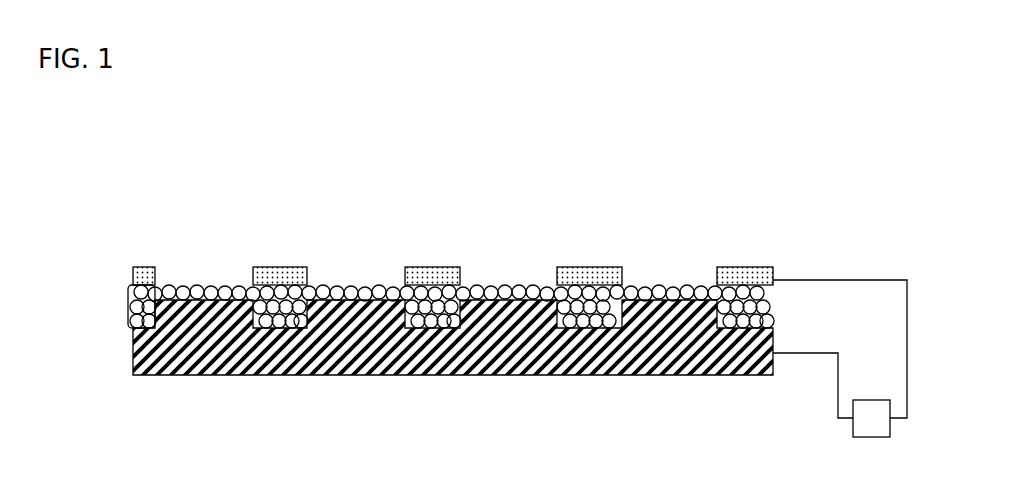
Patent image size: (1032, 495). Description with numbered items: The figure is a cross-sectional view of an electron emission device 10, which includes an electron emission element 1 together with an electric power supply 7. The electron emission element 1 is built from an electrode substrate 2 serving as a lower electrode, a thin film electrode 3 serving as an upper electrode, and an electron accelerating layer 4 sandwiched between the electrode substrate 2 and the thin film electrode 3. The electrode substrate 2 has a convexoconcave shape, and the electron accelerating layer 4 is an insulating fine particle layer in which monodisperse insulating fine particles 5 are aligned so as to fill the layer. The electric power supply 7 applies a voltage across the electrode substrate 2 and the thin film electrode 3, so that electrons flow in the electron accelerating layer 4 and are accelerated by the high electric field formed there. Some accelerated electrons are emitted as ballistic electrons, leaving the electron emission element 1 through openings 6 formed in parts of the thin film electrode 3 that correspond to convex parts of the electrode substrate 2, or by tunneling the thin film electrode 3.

The electron emission device 10 is at (136, 170).
The electron emission element 1 is at (73, 263).
The electrode substrate 2 is at (131, 353).
The thin film electrode 3 is at (131, 275).
The electron accelerating layer 4 is at (128, 308).
The insulating fine particles 5 is at (358, 287).
The openings 6 is at (670, 273).
The electric power supply 7 is at (873, 437).